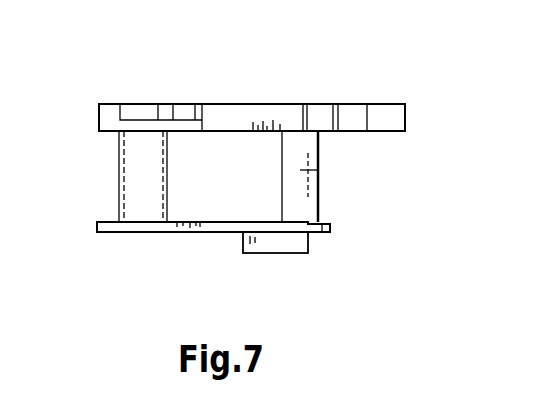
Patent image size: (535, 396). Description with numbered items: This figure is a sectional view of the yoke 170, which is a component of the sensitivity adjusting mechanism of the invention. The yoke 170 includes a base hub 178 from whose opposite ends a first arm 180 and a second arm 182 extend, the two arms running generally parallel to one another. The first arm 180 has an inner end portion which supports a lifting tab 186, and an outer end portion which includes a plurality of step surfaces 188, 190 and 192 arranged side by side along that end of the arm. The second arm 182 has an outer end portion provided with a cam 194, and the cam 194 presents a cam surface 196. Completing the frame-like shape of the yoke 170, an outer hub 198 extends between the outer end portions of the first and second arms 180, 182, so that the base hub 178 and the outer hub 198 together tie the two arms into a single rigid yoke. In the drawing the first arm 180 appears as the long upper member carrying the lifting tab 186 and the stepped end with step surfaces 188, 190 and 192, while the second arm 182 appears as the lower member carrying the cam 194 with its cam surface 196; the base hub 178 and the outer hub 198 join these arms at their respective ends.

The yoke 170 is at (112, 82).
The base hub 178 is at (143, 165).
The first arm 180 is at (227, 114).
The second arm 182 is at (233, 222).
The lifting tab 186 is at (183, 110).
The step surface 188 is at (318, 117).
The step surface 190 is at (352, 117).
The step surface 192 is at (388, 118).
The cam 194 is at (244, 241).
The cam surface 196 is at (278, 238).
The outer hub 198 is at (320, 170).